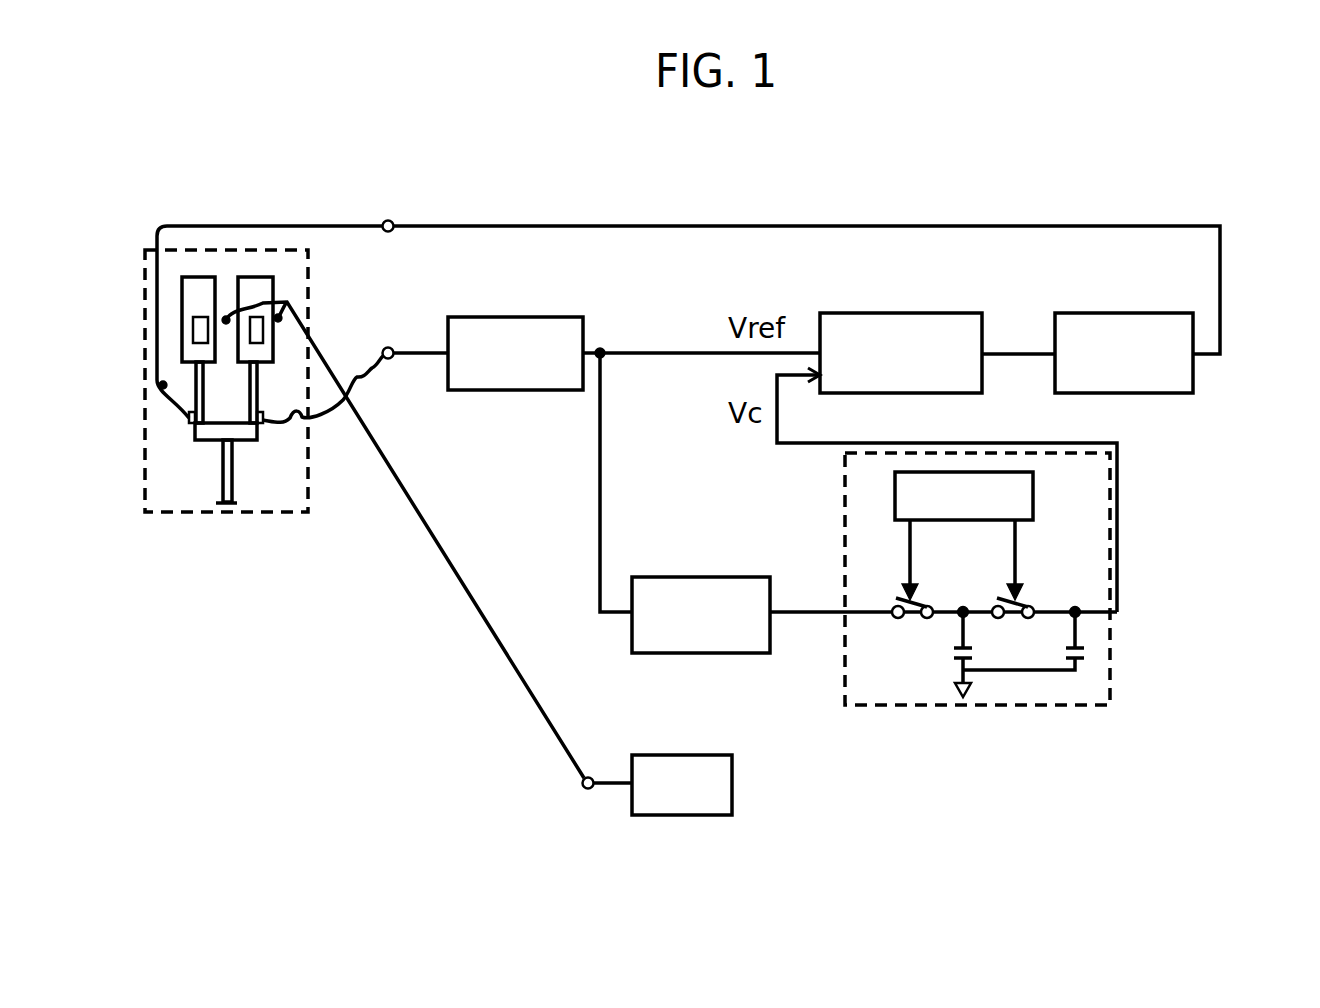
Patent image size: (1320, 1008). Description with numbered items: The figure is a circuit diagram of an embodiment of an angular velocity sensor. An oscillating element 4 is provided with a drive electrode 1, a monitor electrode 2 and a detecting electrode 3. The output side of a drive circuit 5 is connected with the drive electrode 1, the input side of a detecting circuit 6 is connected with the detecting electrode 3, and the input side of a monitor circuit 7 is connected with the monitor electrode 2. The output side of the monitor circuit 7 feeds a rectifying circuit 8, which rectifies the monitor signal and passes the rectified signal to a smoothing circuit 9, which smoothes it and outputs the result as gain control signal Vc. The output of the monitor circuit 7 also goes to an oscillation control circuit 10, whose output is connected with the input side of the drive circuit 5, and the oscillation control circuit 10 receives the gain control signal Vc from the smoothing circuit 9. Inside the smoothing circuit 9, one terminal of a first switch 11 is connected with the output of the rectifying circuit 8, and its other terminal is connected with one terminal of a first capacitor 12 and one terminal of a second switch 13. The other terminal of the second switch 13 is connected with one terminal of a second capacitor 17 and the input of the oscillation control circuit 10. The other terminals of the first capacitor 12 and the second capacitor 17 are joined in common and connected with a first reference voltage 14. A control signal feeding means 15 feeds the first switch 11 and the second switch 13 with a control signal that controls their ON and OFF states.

The drive electrode 1 is at (190, 422).
The monitor electrode 2 is at (258, 430).
The detecting electrode 3 is at (250, 337).
The oscillating element 4 is at (178, 513).
The drive circuit 5 is at (1165, 393).
The detecting circuit 6 is at (683, 815).
The monitor circuit 7 is at (553, 317).
The rectifying circuit 8 is at (697, 653).
The smoothing circuit 9 is at (873, 705).
The oscillation control circuit 10 is at (910, 313).
The first switch 11 is at (908, 622).
The first capacitor 12 is at (958, 658).
The second switch 13 is at (1033, 605).
The first reference voltage 14 is at (972, 693).
The control signal feeding means 15 is at (895, 503).
The second capacitor 17 is at (1090, 650).